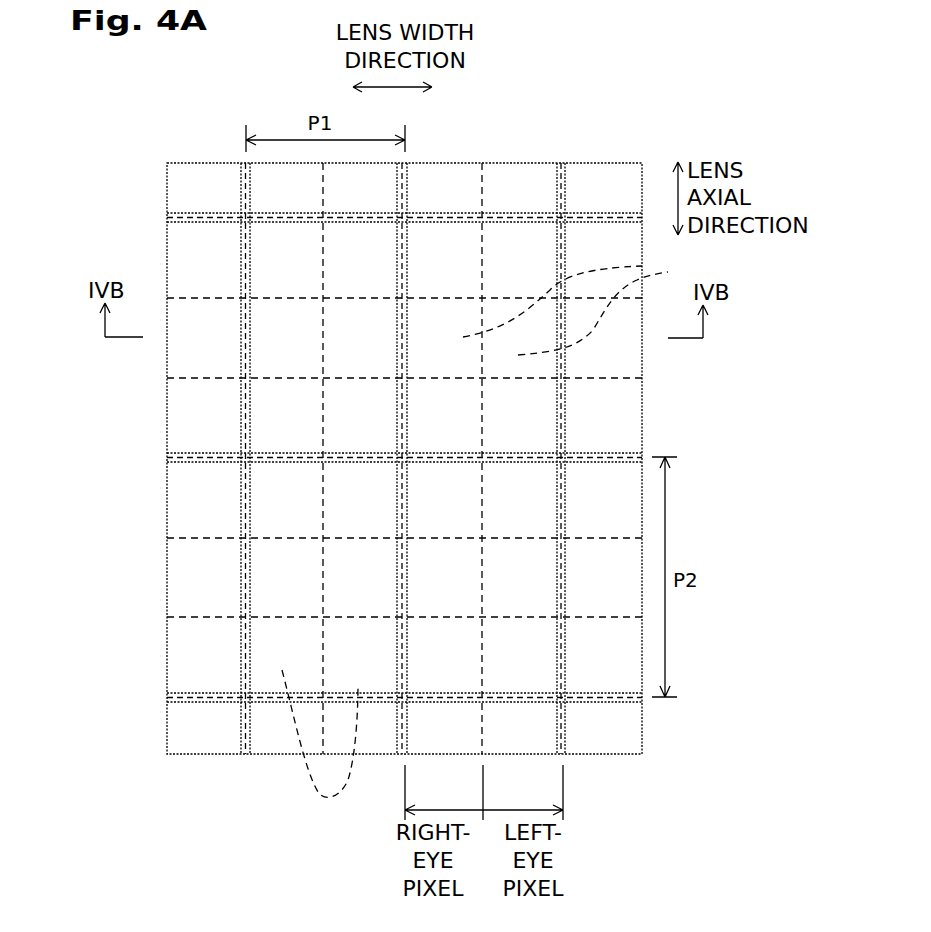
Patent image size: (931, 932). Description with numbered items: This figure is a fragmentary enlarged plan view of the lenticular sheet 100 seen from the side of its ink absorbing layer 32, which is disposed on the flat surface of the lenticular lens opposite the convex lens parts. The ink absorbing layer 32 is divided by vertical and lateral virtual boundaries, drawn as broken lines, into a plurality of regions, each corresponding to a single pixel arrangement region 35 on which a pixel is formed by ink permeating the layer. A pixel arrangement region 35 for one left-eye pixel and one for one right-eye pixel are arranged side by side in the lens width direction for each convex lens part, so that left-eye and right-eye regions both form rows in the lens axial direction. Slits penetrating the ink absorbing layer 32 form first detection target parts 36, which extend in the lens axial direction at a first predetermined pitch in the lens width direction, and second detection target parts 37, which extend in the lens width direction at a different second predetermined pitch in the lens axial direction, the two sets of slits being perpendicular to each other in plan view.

The lenticular sheet 100 is at (630, 142).
The ink absorbing layer 32 is at (192, 584).
The pixel arrangement region 35 is at (489, 540).
The first detection target part 36 is at (245, 188).
The second detection target part 37 is at (500, 216).